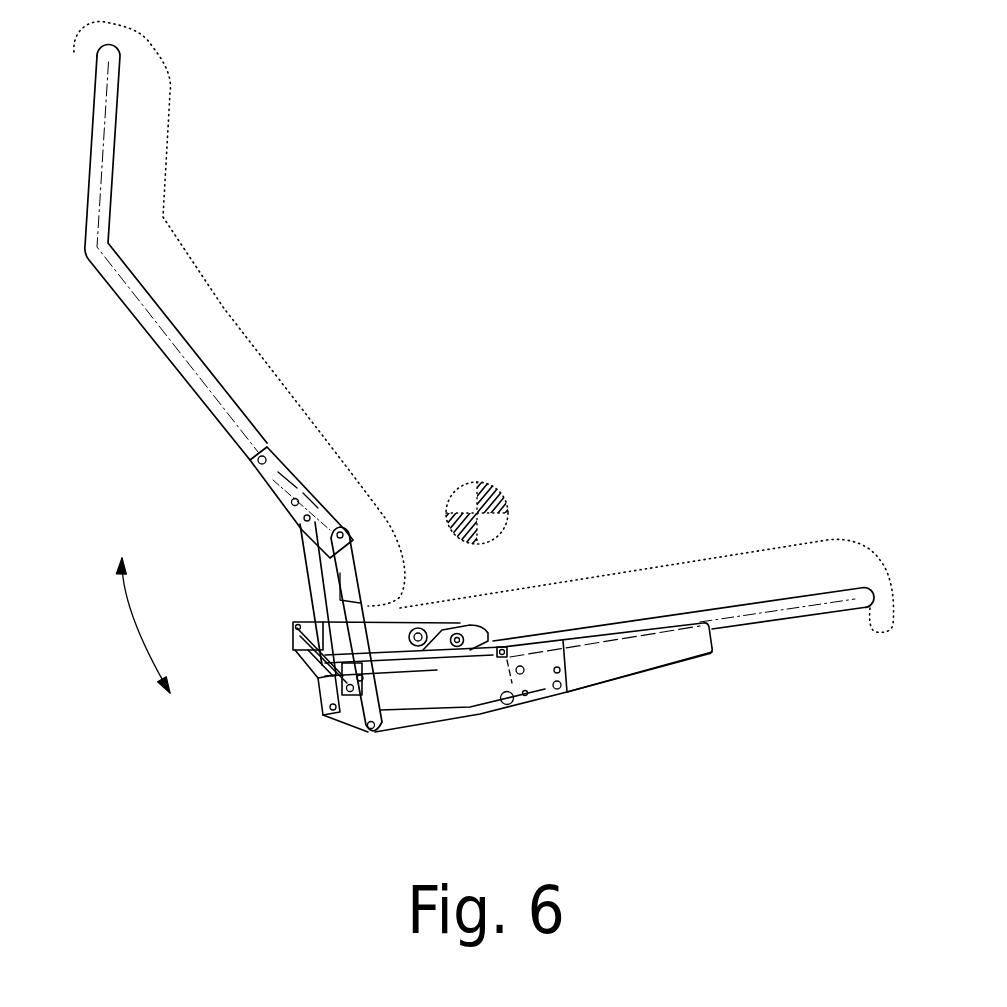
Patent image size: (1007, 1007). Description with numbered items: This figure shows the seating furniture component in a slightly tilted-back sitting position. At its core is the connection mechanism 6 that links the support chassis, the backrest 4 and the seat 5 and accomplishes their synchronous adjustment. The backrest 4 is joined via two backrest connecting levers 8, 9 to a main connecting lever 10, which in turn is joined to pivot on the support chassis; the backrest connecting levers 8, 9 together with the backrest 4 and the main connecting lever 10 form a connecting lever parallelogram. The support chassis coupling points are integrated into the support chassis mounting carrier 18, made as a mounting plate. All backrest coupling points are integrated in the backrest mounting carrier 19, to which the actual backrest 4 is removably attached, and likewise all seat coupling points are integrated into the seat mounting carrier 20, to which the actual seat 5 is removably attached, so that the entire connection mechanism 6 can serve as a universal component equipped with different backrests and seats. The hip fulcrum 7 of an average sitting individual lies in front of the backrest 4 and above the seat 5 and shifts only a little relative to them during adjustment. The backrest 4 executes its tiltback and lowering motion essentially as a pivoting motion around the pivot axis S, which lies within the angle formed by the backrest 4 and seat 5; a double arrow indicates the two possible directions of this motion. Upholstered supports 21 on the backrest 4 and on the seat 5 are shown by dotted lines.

The backrest 4 is at (120, 280).
The seat 5 is at (798, 605).
The connection mechanism 6 is at (305, 703).
The hip fulcrum 7 is at (477, 483).
The backrest connecting lever 8 is at (310, 553).
The backrest connecting lever 9 is at (352, 581).
The main connecting lever 10 is at (400, 717).
The support chassis mounting carrier 18 is at (392, 638).
The backrest mounting carrier 19 is at (257, 471).
The seat mounting carrier 20 is at (537, 675).
The upholstered support 21 is at (152, 132).
The pivot axis S is at (535, 475).